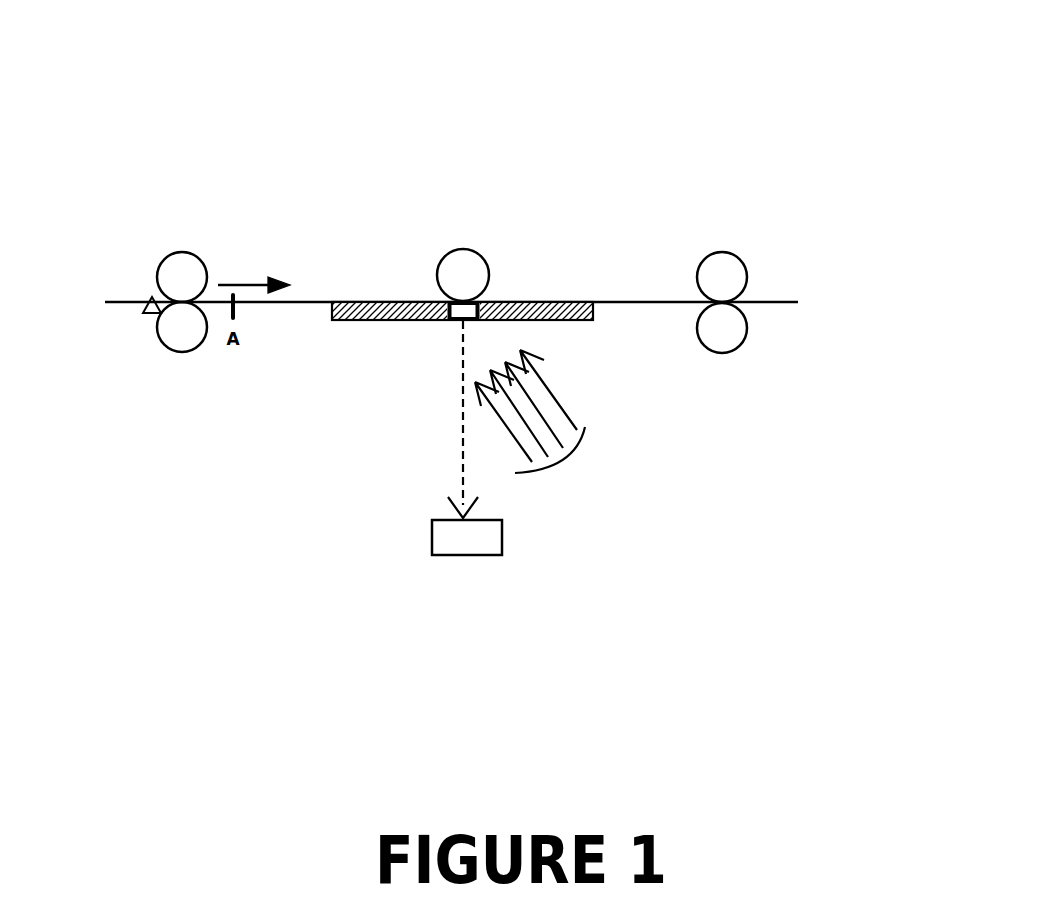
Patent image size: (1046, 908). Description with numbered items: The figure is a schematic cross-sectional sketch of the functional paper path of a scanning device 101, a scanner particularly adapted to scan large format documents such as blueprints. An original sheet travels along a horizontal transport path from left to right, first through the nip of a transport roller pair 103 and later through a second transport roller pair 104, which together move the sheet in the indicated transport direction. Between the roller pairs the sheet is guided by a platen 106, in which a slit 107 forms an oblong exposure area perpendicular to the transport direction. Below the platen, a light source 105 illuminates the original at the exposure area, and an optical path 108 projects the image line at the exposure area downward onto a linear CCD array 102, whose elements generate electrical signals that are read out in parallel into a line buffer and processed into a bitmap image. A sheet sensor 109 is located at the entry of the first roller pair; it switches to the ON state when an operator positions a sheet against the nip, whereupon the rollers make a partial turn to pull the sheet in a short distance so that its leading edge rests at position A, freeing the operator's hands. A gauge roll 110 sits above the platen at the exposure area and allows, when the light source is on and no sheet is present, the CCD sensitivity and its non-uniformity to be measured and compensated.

The scanning device 101 is at (618, 90).
The linear CCD array 102 is at (502, 530).
The transport roller pair 103 is at (177, 250).
The transport roller pair 104 is at (733, 252).
The light source 105 is at (570, 460).
The platen 106 is at (518, 302).
The slit 107 is at (458, 320).
The optical path 108 is at (463, 415).
The sheet sensor 109 is at (152, 313).
The gauge roll 110 is at (457, 248).